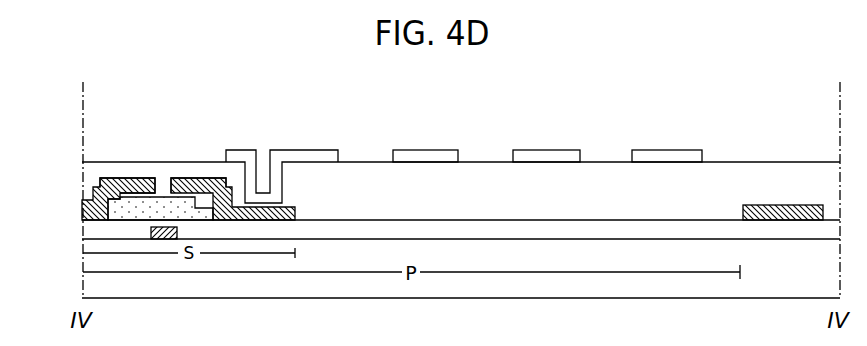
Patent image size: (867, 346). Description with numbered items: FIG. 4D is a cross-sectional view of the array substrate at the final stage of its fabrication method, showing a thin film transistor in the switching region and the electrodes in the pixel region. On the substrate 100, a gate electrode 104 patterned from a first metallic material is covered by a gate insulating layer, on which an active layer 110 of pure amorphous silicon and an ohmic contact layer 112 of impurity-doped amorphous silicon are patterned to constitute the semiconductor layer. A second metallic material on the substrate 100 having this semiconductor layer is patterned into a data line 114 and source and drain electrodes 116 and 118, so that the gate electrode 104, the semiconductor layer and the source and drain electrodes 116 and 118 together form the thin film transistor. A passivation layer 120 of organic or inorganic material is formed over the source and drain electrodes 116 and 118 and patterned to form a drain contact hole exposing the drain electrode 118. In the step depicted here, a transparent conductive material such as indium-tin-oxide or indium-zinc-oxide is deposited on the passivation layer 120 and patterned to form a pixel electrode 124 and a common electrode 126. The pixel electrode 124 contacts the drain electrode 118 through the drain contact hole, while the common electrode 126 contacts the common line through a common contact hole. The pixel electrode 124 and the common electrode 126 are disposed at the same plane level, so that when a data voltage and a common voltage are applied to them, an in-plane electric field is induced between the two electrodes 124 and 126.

The substrate 100 is at (787, 282).
The gate electrode 104 is at (163, 227).
The active layer 110 is at (213, 197).
The ohmic contact layer 112 is at (125, 177).
The data line 114 is at (772, 205).
The source electrode 116 is at (88, 192).
The drain electrode 118 is at (297, 212).
The passivation layer 120 is at (479, 153).
The pixel electrode 124 is at (286, 150).
The common electrode 126 is at (420, 150).